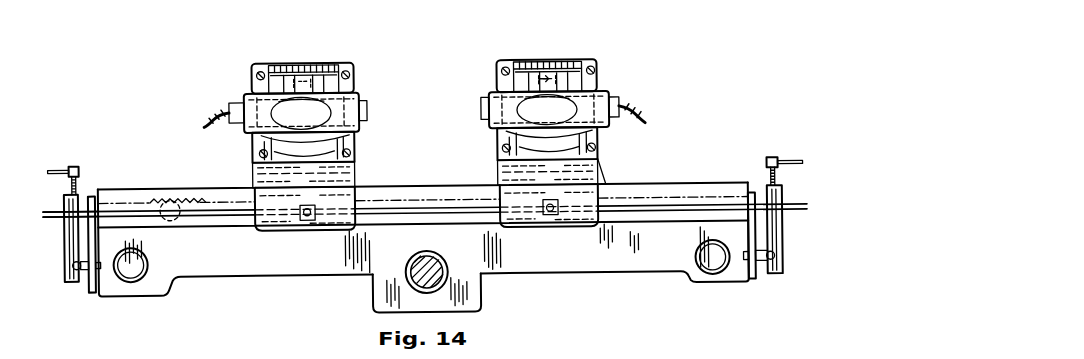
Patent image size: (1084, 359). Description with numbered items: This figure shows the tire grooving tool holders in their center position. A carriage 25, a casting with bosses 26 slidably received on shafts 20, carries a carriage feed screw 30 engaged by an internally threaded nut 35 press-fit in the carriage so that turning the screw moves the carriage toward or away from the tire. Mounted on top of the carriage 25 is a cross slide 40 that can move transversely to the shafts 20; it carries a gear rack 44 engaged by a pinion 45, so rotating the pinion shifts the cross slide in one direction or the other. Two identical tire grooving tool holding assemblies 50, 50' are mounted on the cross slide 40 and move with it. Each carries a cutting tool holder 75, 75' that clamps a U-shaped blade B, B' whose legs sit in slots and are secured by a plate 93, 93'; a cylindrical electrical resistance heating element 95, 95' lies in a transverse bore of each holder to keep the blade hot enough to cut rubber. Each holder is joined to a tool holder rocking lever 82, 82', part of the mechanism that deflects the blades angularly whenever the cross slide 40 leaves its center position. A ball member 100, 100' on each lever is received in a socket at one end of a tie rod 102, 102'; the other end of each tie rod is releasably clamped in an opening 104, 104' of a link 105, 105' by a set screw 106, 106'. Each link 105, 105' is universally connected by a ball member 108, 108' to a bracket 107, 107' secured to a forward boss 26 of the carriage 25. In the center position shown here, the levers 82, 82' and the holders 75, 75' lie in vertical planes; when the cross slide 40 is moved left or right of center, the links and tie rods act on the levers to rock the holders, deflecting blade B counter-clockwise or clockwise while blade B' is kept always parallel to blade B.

The shafts 20 is at (147, 262).
The carriage 25 is at (425, 240).
The bosses 26 is at (152, 285).
The carriage feed screw 30 is at (436, 260).
The internally threaded nut 35 is at (410, 282).
The cross slide 40 is at (407, 190).
The gear rack 44 is at (176, 197).
The pinion 45 is at (183, 216).
The tire grooving tool holding assembly 50 is at (550, 96).
The tire grooving tool holding assembly 50' is at (302, 96).
The cutting tool holder 75 is at (558, 93).
The cutting tool holder 75' is at (309, 95).
The tool holder rocking lever 82 is at (534, 205).
The tool holder rocking lever 82' is at (324, 209).
The plate 93 is at (549, 80).
The plate 93' is at (312, 85).
The heating element 95 is at (638, 104).
The heating element 95' is at (306, 106).
The ball member 100 is at (561, 227).
The ball member 100' is at (320, 233).
The tie rod 102 is at (425, 200).
The tie rod 102' is at (107, 190).
The opening 104 is at (746, 176).
The opening 104' is at (104, 183).
The link 105 is at (796, 229).
The link 105' is at (57, 253).
The set screw 106 is at (768, 164).
The set screw 106' is at (74, 156).
The bracket 107 is at (735, 248).
The bracket 107' is at (113, 258).
The ball member 108 is at (773, 276).
The ball member 108' is at (81, 292).
The blade B is at (540, 58).
The blade B' is at (293, 61).